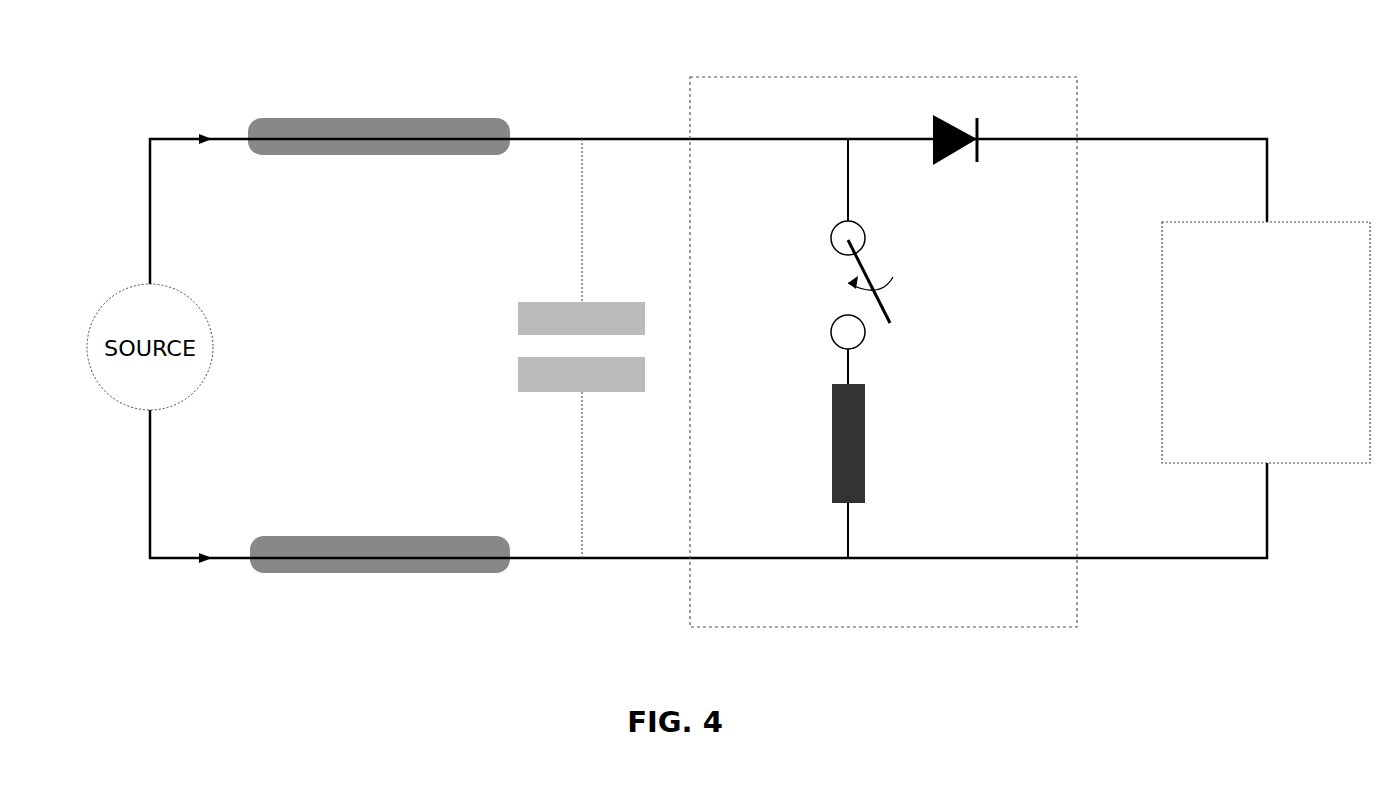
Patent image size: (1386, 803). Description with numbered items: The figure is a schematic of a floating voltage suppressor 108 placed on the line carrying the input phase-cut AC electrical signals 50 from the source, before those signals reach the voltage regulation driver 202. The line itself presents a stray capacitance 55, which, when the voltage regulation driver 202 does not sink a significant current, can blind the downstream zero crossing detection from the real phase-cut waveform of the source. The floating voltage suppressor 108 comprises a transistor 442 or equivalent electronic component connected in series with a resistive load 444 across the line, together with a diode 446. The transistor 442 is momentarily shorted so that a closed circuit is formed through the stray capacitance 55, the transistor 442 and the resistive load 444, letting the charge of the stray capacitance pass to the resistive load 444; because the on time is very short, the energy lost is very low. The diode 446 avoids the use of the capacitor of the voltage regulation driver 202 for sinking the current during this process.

The input phase-cut AC electrical signals 50 is at (632, 155).
The stray capacitance of the line 55 is at (521, 348).
The floating voltage suppressor 108 is at (930, 73).
The voltage regulation driver 202 is at (1266, 342).
The transistor 442 is at (897, 275).
The resistive load 444 is at (872, 483).
The diode 446 is at (980, 132).